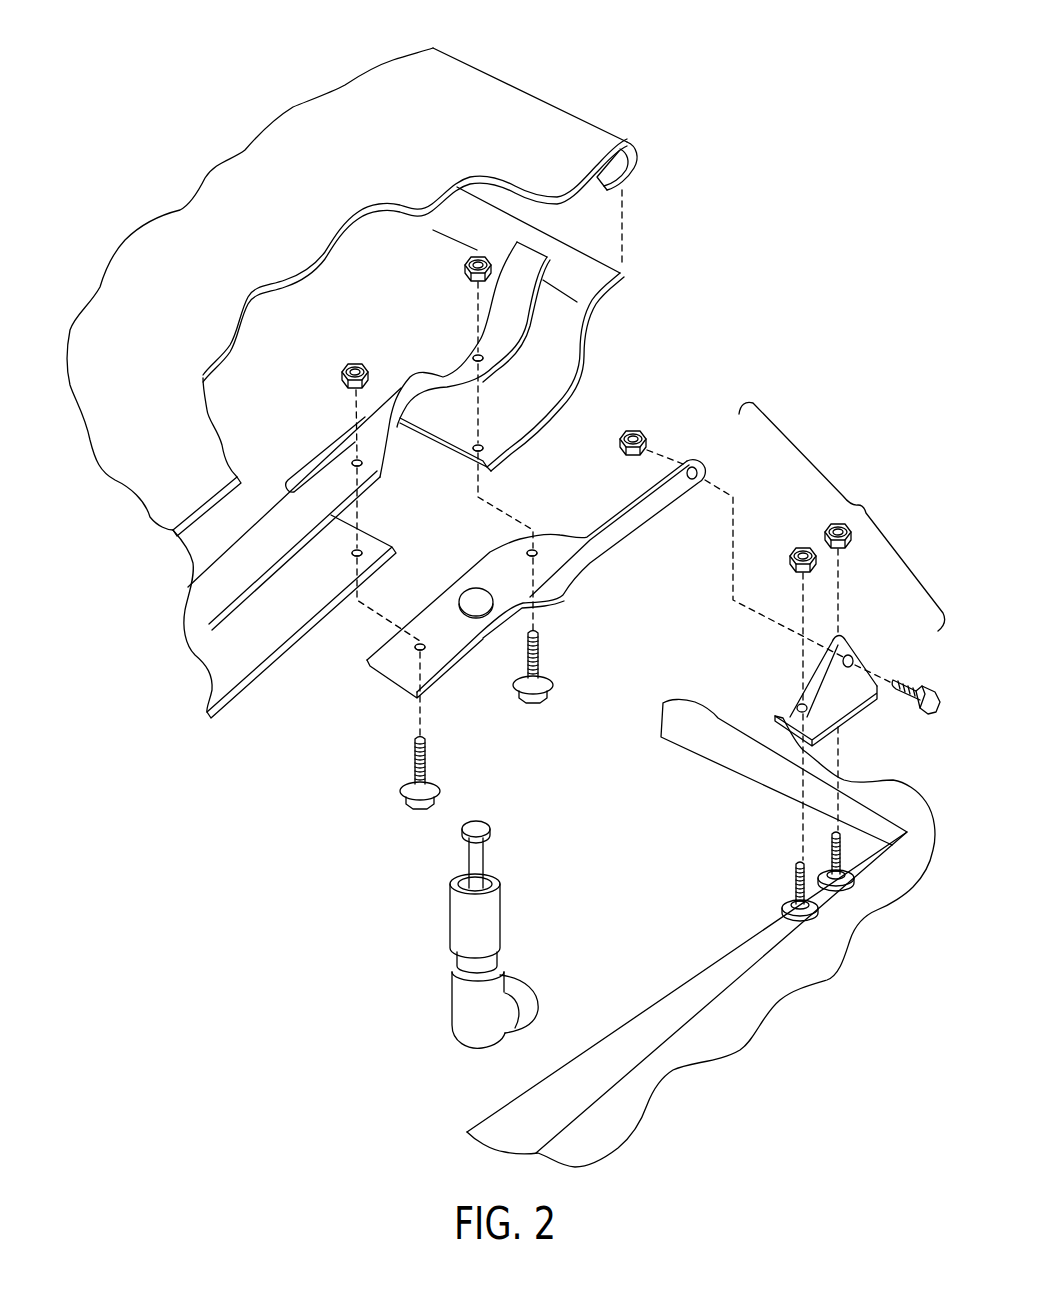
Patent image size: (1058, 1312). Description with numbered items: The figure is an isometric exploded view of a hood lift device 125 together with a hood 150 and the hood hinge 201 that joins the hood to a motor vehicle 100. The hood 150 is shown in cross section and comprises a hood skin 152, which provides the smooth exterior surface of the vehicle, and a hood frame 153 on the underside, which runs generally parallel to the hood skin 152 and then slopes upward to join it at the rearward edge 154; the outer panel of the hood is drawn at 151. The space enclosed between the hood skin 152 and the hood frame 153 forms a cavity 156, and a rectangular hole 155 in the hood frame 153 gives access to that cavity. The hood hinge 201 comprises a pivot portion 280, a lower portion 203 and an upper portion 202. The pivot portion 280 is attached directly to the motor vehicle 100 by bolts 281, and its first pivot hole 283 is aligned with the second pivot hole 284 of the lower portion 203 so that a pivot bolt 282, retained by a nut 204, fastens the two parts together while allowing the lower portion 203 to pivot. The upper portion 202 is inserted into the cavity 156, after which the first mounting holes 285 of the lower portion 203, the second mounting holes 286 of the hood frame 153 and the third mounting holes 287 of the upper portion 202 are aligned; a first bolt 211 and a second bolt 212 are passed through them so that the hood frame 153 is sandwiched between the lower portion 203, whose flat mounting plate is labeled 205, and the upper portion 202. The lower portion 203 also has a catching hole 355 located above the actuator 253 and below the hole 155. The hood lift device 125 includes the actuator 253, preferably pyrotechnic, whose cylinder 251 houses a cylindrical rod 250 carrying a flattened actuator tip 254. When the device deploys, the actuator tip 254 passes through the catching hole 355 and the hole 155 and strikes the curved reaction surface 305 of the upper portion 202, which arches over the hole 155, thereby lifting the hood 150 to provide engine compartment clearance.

The motor vehicle 100 is at (800, 977).
The hood lift device 125 is at (397, 964).
The hood 150 is at (147, 557).
The hood top panel 151 is at (553, 77).
The hood skin 152 is at (163, 260).
The hood frame 153 is at (548, 386).
The rearward edge 154 is at (638, 147).
The hole 155 is at (413, 500).
The cavity 156 is at (380, 268).
The hood hinge 201 is at (622, 572).
The upper portion 202 is at (210, 590).
The lower portion 203 is at (620, 573).
The nut 204 is at (692, 467).
The lever plate 205 is at (390, 683).
The first bolt 211 is at (553, 688).
The second bolt 212 is at (400, 792).
The rod 250 is at (480, 861).
The cylinder 251 is at (503, 917).
The actuator 253 is at (547, 973).
The actuator tip 254 is at (493, 833).
The pivot portion 280 is at (840, 705).
The bolts 281 is at (797, 866).
The pivot bolt 282 is at (933, 692).
The first pivot hole 283 is at (848, 657).
The second pivot hole 284 is at (693, 487).
The first mounting holes 285 is at (415, 649).
The second mounting holes 286 is at (353, 553).
The third mounting holes 287 is at (476, 355).
The reaction surface 305 is at (393, 380).
The catching hole 355 is at (473, 597).